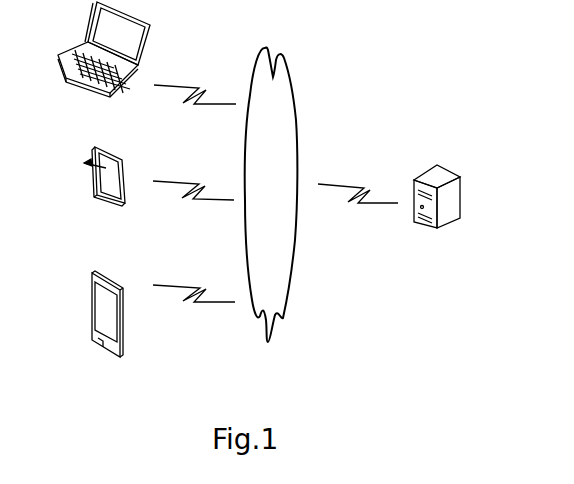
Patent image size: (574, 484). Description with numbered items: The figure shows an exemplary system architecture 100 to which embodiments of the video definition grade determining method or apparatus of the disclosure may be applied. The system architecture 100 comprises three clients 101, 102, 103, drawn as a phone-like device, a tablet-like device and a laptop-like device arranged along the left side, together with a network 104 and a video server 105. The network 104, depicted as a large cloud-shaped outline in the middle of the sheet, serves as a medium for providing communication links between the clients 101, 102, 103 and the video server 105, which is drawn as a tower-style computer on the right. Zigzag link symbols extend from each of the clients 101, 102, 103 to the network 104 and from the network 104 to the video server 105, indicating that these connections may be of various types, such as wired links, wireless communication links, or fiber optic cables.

The system architecture 100 is at (452, 33).
The client 101 is at (107, 328).
The client 102 is at (104, 190).
The client 103 is at (104, 58).
The network 104 is at (271, 194).
The video server 105 is at (437, 210).